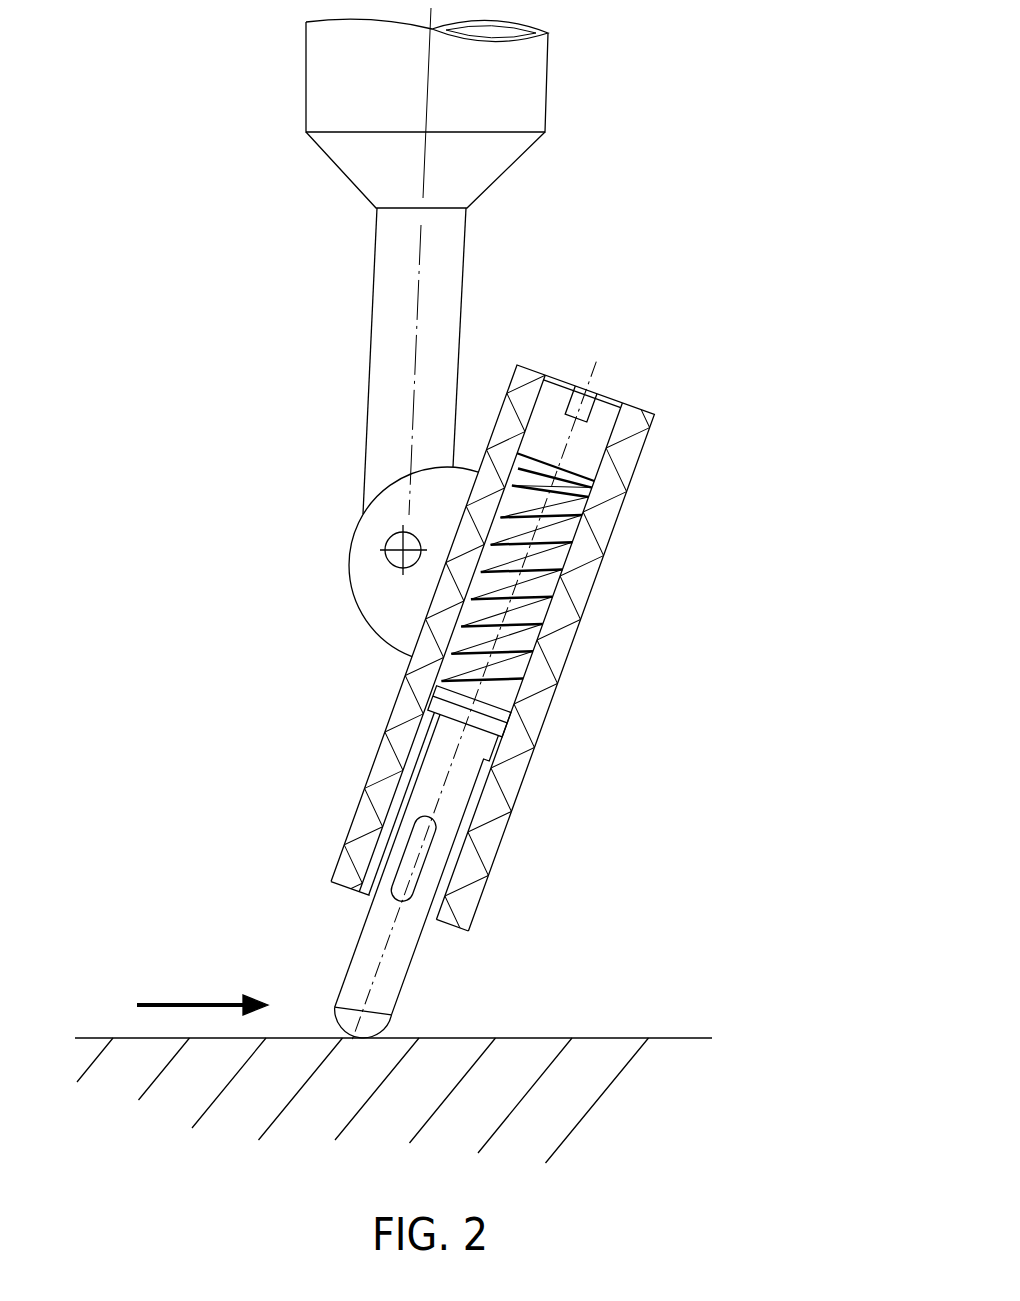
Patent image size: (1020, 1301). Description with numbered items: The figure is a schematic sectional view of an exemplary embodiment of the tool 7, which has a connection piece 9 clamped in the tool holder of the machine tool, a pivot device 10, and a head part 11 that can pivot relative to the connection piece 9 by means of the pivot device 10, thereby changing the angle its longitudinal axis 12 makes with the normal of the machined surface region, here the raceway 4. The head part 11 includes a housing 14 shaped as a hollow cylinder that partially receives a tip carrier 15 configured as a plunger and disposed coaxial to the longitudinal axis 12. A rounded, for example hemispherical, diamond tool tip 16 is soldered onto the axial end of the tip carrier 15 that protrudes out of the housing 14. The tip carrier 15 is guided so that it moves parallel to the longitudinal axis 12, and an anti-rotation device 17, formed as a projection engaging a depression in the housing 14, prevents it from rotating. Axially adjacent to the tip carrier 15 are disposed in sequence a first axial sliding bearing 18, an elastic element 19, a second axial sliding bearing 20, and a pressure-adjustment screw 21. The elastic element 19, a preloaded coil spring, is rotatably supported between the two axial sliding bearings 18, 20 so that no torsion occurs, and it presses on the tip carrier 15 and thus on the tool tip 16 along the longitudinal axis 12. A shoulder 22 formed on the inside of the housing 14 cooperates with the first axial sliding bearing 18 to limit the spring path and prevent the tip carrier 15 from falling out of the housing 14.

The raceway 4 is at (660, 1037).
The tool 7 is at (245, 439).
The connection piece 9 is at (453, 163).
The pivot device 10 is at (355, 567).
The head part 11 is at (322, 809).
The longitudinal axis 12 is at (598, 362).
The housing 14 is at (507, 773).
The tip carrier 15 is at (390, 959).
The tool tip 16 is at (367, 1020).
The anti-rotation device 17 is at (415, 862).
The first axial sliding bearing 18 is at (473, 710).
The elastic element 19 is at (503, 614).
The second axial sliding bearing 20 is at (550, 487).
The pressure-adjustment screw 21 is at (570, 430).
The shoulder 22 is at (418, 743).